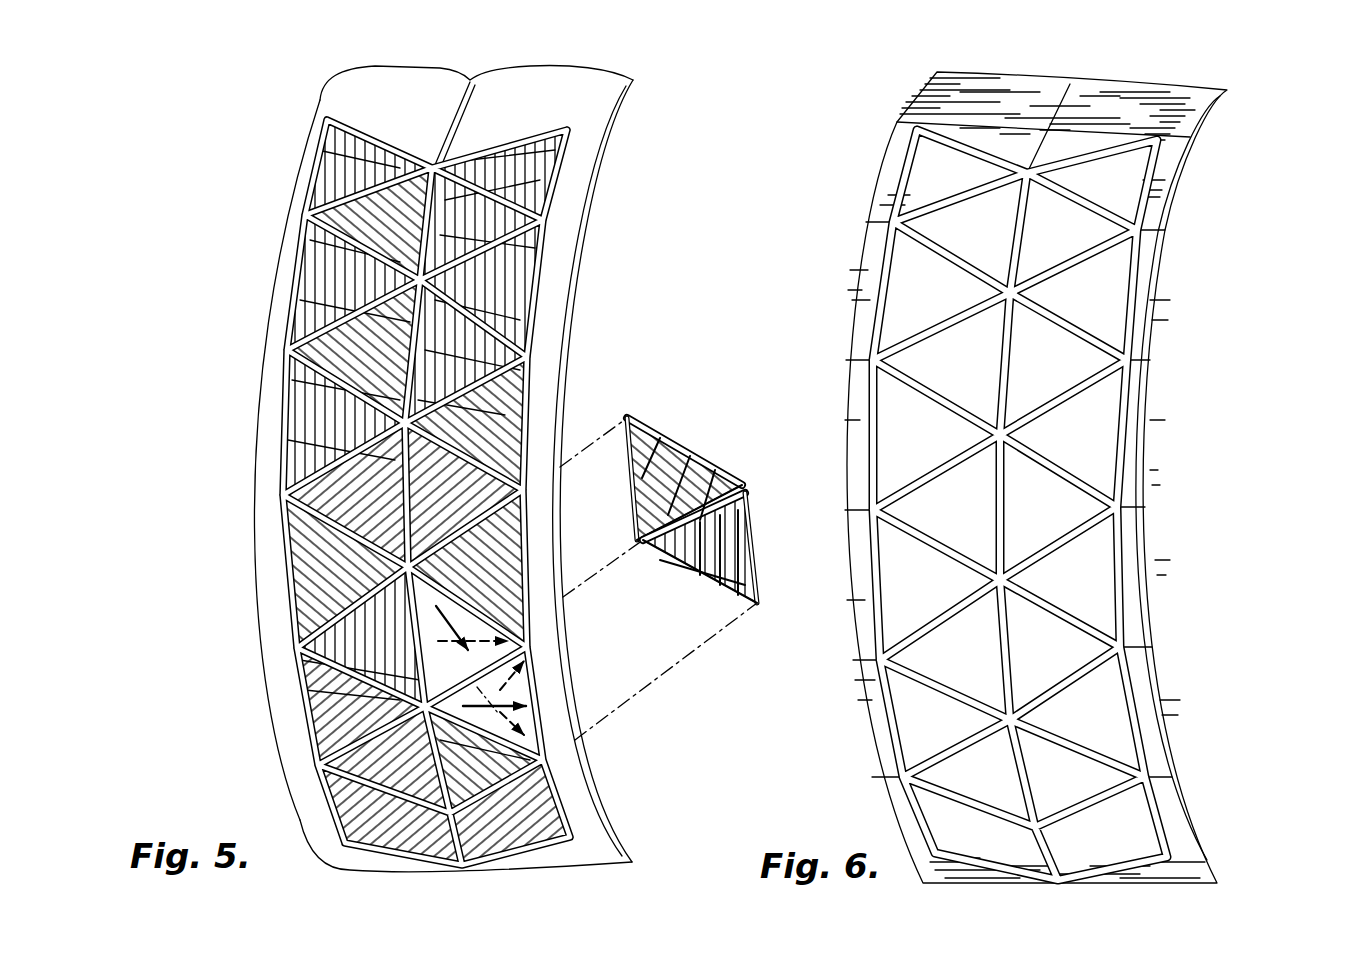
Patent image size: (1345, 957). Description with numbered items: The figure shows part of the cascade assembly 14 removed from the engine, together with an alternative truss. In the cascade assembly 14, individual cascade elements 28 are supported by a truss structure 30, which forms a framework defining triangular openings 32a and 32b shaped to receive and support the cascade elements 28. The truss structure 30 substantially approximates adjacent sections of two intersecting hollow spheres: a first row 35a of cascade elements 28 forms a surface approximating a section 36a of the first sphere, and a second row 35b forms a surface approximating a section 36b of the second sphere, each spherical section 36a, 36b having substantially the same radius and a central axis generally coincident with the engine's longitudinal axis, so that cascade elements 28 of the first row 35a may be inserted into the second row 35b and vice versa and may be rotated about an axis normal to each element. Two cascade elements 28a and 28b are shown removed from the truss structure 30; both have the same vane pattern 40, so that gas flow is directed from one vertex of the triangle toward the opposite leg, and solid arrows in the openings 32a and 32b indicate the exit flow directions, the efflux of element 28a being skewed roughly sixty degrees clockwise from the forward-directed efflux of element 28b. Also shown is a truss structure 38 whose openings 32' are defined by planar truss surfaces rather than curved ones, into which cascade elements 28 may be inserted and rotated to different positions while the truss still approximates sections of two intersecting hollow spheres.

In FIG. 5, the cascade assembly 14 is at (188, 496).
In FIG. 5, the cascade element 28 is at (340, 160).
In FIG. 5, the cascade element 28a is at (648, 422).
In FIG. 5, the cascade element 28b is at (697, 570).
In FIG. 5, the truss structure 30 is at (590, 200).
In FIG. 5, the opening 32a is at (525, 604).
In FIG. 5, the opening 32b is at (532, 713).
In FIG. 6, the opening 32' is at (1150, 364).
In FIG. 5, the first row 35a is at (397, 127).
In FIG. 5, the second row 35b is at (527, 120).
In FIG. 5, the section of the first sphere 36a is at (324, 106).
In FIG. 6, the section of the first sphere 36a is at (997, 103).
In FIG. 5, the section of the second sphere 36b is at (613, 84).
In FIG. 6, the section of the second sphere 36b is at (1127, 108).
In FIG. 6, the truss structure 38 is at (1185, 207).
In FIG. 5, the vane pattern 40 is at (697, 473).